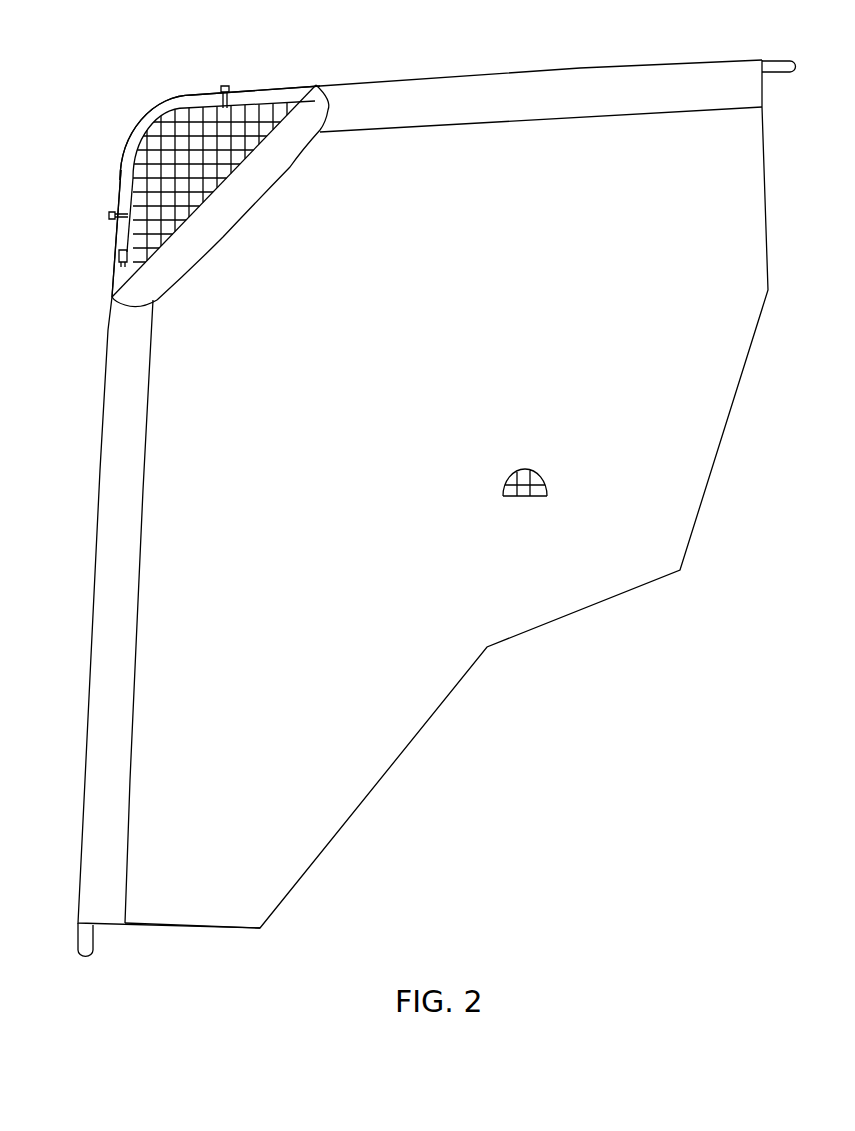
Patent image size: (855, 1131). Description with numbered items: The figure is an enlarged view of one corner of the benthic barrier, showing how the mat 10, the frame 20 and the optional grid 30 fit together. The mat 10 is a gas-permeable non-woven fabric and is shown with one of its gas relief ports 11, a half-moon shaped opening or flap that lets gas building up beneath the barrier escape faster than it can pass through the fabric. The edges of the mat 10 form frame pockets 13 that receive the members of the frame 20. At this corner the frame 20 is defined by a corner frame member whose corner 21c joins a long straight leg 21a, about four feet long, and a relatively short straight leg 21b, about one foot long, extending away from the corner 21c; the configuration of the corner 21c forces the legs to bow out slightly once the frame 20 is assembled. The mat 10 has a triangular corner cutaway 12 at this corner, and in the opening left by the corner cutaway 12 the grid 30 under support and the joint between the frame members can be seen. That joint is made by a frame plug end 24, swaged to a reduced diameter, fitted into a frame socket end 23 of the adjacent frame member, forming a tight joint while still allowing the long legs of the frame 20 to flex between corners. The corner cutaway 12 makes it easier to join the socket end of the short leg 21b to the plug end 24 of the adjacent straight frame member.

The mat 10 is at (448, 365).
The gas relief ports 11 is at (530, 472).
The corner cutaway 12 is at (243, 214).
The frame pockets 13 is at (482, 99).
The frame 20 is at (262, 90).
The straight leg 21a is at (293, 92).
The straight leg 21b is at (120, 186).
The corner 21c is at (145, 120).
The frame socket end 23 is at (123, 236).
The frame plug end 24 is at (118, 254).
The grid 30 is at (185, 150).